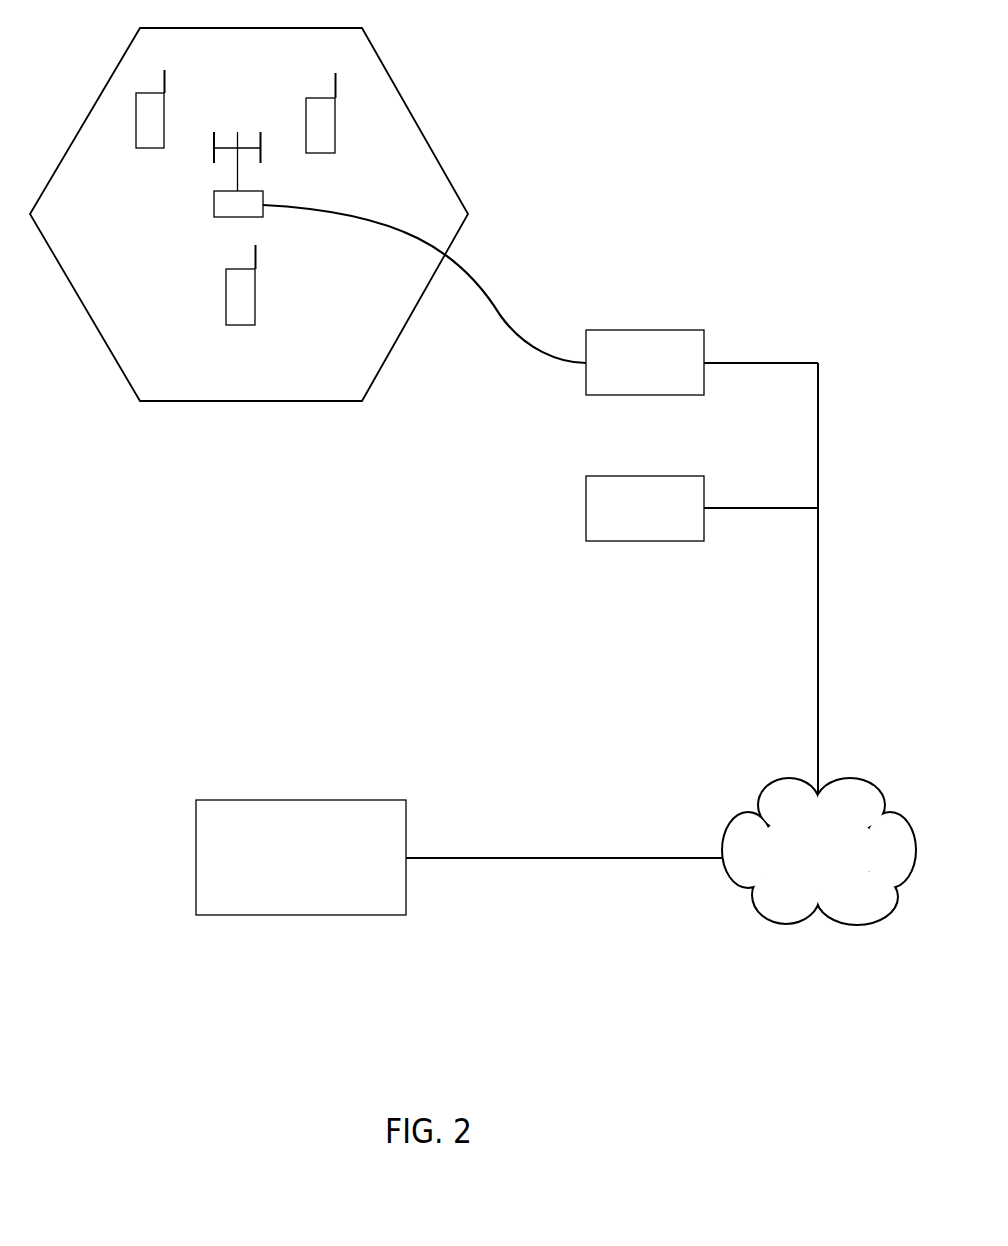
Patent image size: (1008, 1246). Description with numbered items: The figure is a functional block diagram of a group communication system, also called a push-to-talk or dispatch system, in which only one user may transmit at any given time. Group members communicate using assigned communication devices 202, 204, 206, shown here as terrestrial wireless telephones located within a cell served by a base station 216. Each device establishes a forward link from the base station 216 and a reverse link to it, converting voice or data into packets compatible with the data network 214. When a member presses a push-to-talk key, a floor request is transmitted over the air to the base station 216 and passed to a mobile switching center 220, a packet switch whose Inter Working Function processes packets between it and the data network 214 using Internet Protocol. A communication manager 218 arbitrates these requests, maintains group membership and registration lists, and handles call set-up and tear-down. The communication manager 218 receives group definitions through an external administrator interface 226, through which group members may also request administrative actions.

The communication device 202 is at (164, 120).
The communication device 204 is at (335, 125).
The communication device 206 is at (255, 298).
The base station 216 is at (214, 203).
The mobile switching center 220 is at (646, 330).
The communication manager 218 is at (646, 476).
The data network 214 is at (767, 788).
The administrator interface 226 is at (302, 800).